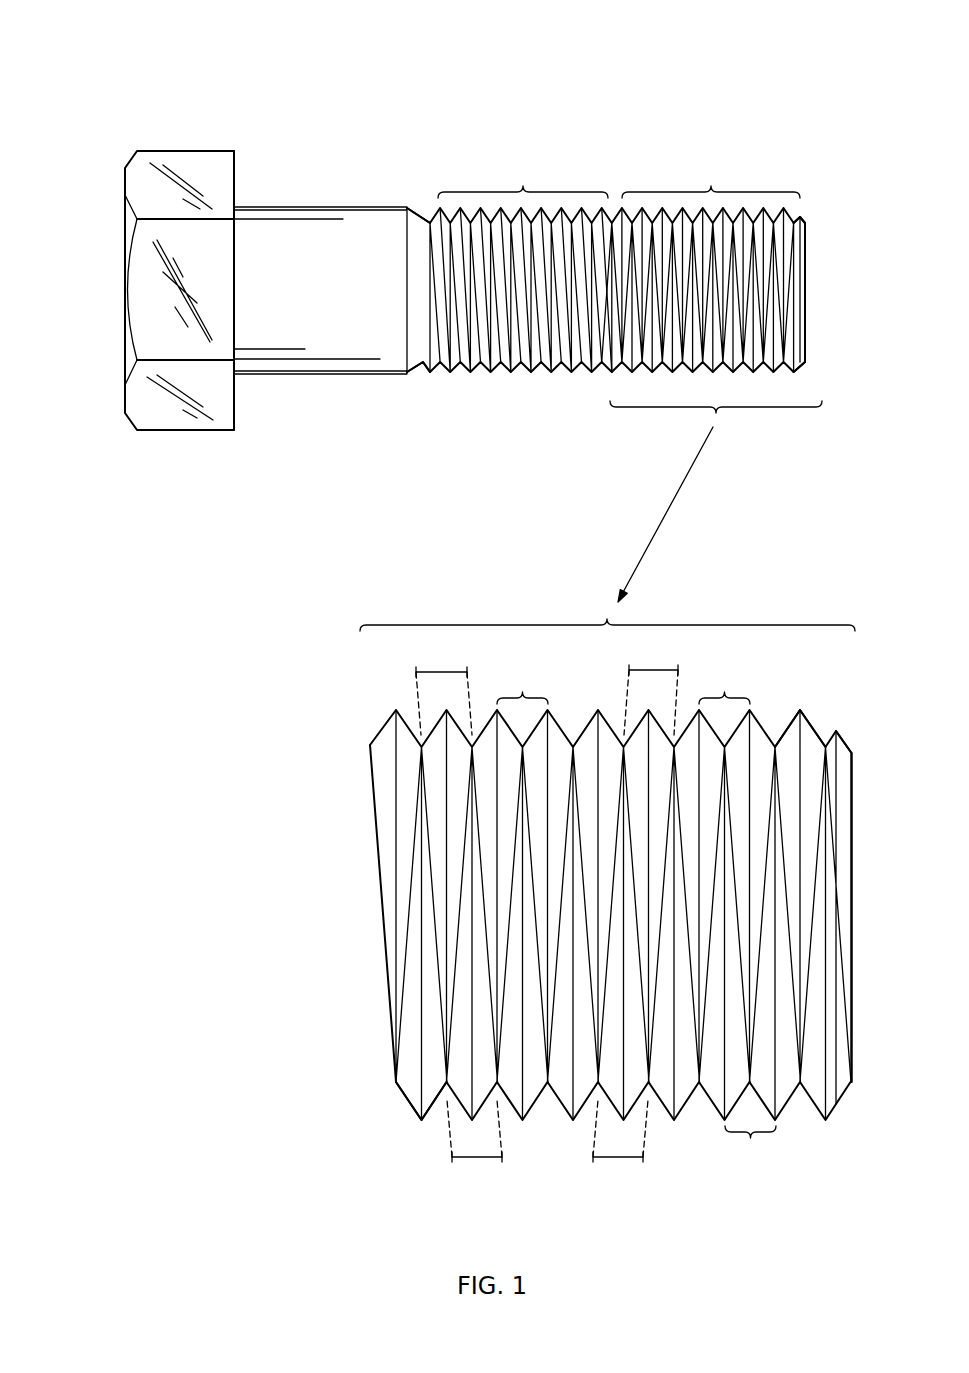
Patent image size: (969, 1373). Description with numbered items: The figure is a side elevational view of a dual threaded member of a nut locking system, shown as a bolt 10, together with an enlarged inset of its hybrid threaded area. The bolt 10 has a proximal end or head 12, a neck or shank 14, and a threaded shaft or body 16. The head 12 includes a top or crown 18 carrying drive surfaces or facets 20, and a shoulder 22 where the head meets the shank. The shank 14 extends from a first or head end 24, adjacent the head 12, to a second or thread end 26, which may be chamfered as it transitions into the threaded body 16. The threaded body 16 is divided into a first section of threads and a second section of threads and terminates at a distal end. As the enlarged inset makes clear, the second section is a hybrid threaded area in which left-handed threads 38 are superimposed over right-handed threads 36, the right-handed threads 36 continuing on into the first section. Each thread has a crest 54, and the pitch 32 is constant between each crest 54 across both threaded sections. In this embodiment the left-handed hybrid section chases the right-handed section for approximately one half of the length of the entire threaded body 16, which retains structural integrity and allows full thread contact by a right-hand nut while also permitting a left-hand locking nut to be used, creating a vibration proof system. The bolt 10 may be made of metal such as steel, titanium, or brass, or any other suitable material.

The threaded member 10 is at (171, 72).
The head 12 is at (166, 443).
The shank 14 is at (294, 202).
The threaded body 16 is at (627, 150).
The crown 18 is at (125, 277).
The facets 20 is at (148, 186).
The shoulder 22 is at (237, 172).
The head end 24 is at (235, 270).
The thread end 26 is at (416, 192).
The pitch 32 is at (524, 692).
The right-handed threads 36 is at (445, 670).
The left-handed threads 38 is at (655, 672).
The crest 54 is at (802, 712).